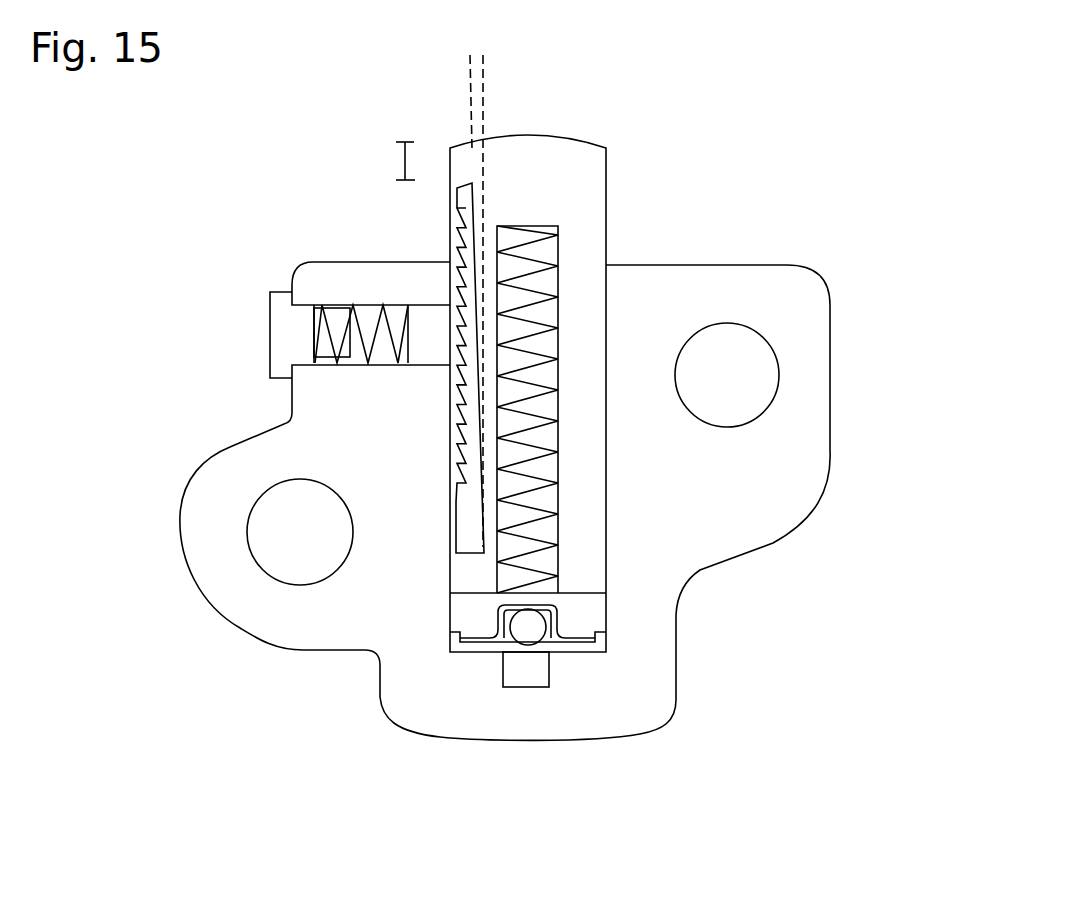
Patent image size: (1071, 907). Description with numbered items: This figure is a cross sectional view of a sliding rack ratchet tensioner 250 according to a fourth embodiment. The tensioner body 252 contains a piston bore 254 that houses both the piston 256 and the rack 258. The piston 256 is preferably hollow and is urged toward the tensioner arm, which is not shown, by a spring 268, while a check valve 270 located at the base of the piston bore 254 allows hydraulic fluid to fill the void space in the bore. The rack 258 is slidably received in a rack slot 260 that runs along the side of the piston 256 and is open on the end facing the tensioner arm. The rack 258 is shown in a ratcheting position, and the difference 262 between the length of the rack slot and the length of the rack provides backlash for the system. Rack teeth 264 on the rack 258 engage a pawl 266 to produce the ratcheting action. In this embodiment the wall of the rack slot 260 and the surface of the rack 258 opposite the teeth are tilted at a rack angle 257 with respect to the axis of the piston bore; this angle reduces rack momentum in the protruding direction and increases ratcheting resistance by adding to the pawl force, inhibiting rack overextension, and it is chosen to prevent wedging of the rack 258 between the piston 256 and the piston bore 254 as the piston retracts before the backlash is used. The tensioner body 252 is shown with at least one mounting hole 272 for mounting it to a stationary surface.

The sliding rack ratchet tensioner 250 is at (842, 172).
The tensioner body 252 is at (720, 490).
The piston bore 254 is at (607, 322).
The piston 256 is at (565, 192).
The rack angle 257 is at (475, 101).
The rack 258 is at (462, 258).
The rack slot 260 is at (452, 523).
The difference 262 is at (379, 161).
The rack teeth 264 is at (453, 395).
The pawl 266 is at (435, 335).
The spring 268 is at (540, 520).
The check valve 270 is at (530, 640).
The mounting hole 272 is at (750, 393).